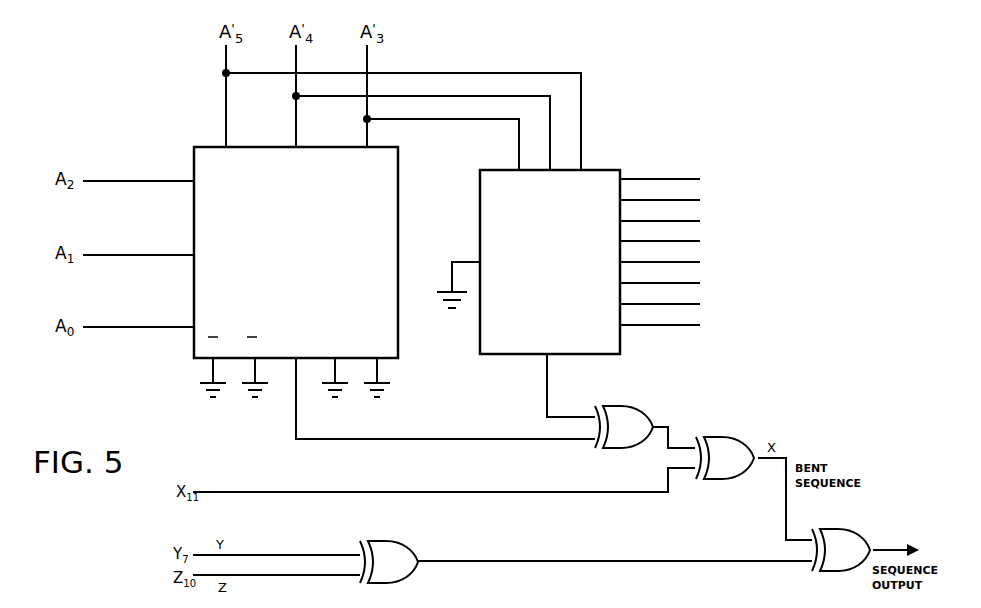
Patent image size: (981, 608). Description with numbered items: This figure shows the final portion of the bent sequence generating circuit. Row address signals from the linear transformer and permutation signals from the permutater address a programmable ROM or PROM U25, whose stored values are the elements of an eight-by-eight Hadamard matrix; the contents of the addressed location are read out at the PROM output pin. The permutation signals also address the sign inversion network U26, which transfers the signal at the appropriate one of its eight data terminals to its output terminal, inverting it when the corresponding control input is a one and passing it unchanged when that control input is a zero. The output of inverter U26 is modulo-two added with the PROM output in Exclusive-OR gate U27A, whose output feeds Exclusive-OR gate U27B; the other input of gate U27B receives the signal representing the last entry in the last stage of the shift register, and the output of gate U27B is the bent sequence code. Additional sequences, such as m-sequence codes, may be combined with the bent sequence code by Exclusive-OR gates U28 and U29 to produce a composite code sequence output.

The PROM U25 is at (296, 272).
The sign inversion network U26 is at (581, 261).
The Exclusive-OR gate U27A is at (624, 427).
The Exclusive-OR gate U27B is at (725, 458).
The Exclusive-OR gate U28 is at (389, 562).
The Exclusive-OR gate U29 is at (841, 550).